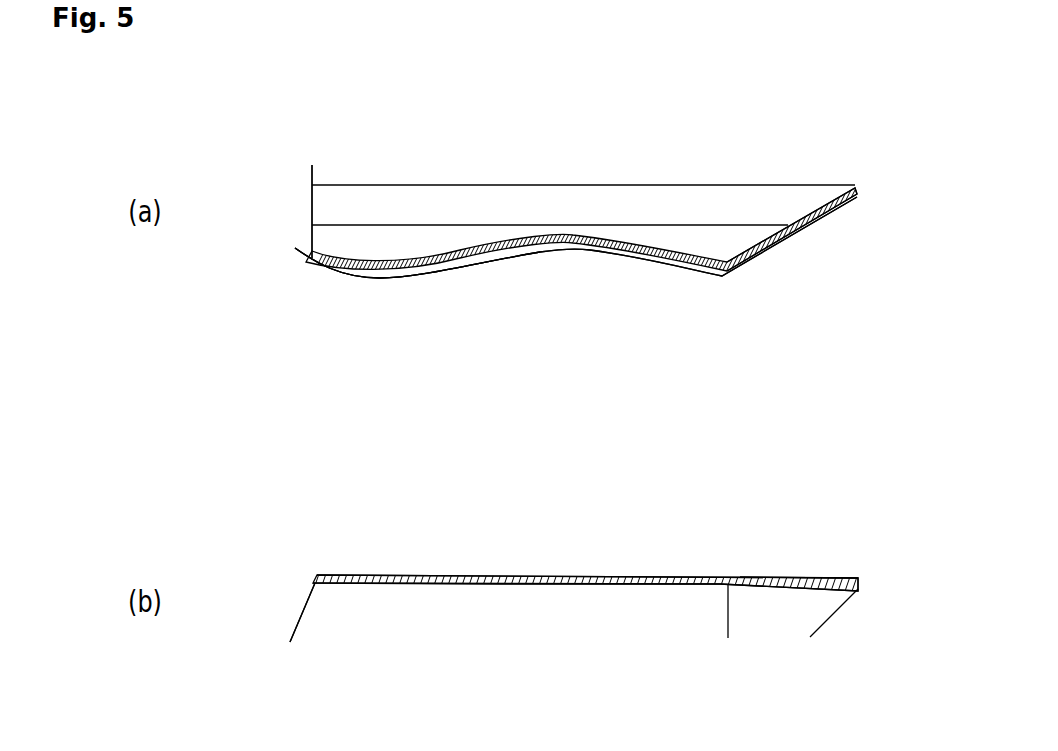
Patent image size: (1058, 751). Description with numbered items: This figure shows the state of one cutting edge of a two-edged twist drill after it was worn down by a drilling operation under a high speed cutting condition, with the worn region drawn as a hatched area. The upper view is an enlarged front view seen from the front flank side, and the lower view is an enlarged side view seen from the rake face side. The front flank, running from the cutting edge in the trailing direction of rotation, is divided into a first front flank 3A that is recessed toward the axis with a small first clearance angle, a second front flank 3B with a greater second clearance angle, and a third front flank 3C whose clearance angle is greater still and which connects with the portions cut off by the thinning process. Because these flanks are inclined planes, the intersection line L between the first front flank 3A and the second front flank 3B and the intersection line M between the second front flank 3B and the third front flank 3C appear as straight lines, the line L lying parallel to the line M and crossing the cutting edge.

The first front flank 3A is at (510, 191).
The second front flank 3B is at (543, 160).
The third front flank 3C is at (325, 177).
The intersection line L is at (430, 225).
The intersection line M is at (490, 185).